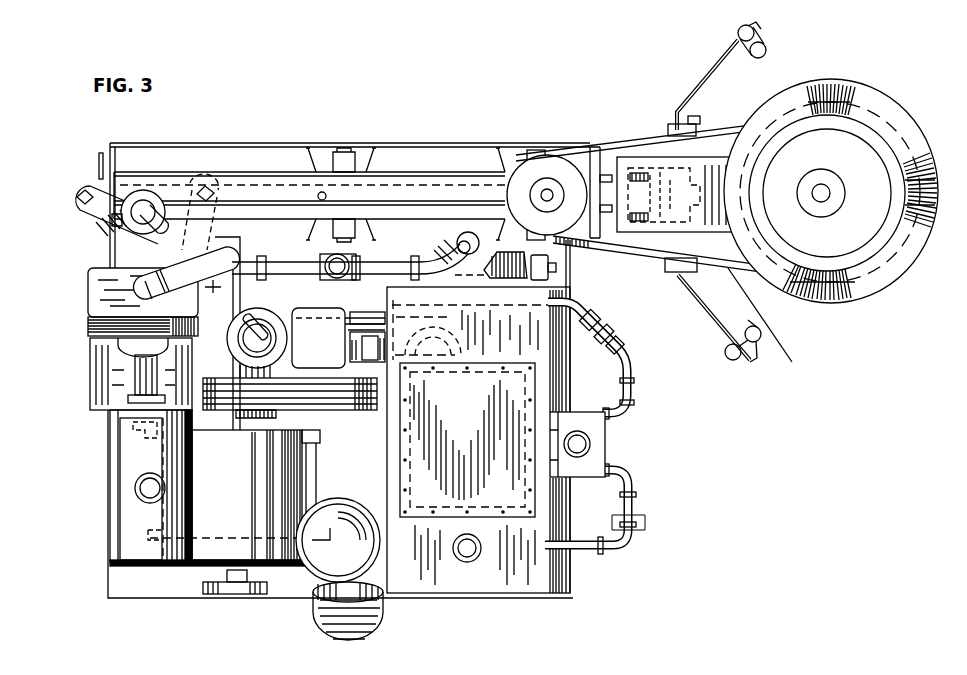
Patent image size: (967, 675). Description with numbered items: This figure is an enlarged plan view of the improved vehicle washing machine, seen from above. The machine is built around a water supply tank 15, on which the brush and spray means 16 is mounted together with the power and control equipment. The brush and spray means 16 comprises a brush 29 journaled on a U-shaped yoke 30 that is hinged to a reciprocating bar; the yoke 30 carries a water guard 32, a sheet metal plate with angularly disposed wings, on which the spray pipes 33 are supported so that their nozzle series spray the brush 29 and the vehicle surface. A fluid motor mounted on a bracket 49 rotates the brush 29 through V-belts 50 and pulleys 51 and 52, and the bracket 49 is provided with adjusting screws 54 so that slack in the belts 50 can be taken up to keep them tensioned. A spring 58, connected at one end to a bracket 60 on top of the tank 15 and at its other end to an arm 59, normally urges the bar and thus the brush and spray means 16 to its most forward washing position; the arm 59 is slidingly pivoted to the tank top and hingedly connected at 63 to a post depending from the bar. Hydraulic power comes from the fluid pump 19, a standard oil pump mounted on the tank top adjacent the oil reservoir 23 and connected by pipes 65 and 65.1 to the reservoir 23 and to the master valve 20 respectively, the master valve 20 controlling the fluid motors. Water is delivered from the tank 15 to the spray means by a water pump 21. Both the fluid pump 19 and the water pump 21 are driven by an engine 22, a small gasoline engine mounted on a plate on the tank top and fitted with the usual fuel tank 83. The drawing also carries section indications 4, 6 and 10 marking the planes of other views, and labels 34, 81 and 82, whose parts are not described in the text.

The section line 4- 4 is at (47, 236).
The section line 6- 6 is at (583, 288).
The section line 10- 10 is at (555, 278).
The water supply tank 15 is at (178, 592).
The brush and spray means 16 is at (828, 318).
The fluid pump 19 is at (303, 314).
The master valve 20 is at (614, 441).
The water pump 21 is at (92, 290).
The engine 22 is at (282, 572).
The oil reservoir 23 is at (476, 429).
The brush 29 is at (887, 100).
The yoke 30 is at (771, 325).
The water guard 32 is at (683, 290).
The spray pipes 33 is at (760, 345).
The wheel hub 34 is at (825, 189).
The bracket 49 is at (592, 160).
The V-belts 50 is at (637, 250).
The pulley 51 is at (532, 162).
The pulley 52 is at (862, 233).
The adjusting screws 54 is at (637, 175).
The spring 58 is at (495, 260).
The arm 59 is at (112, 220).
The bracket 60 is at (538, 264).
The hinge connection 63 is at (115, 209).
The pipe 65 is at (381, 346).
The pipe 65.1 is at (360, 314).
The guide rail 81 is at (357, 410).
The slide block 82 is at (193, 407).
The fuel tank 83 is at (120, 537).